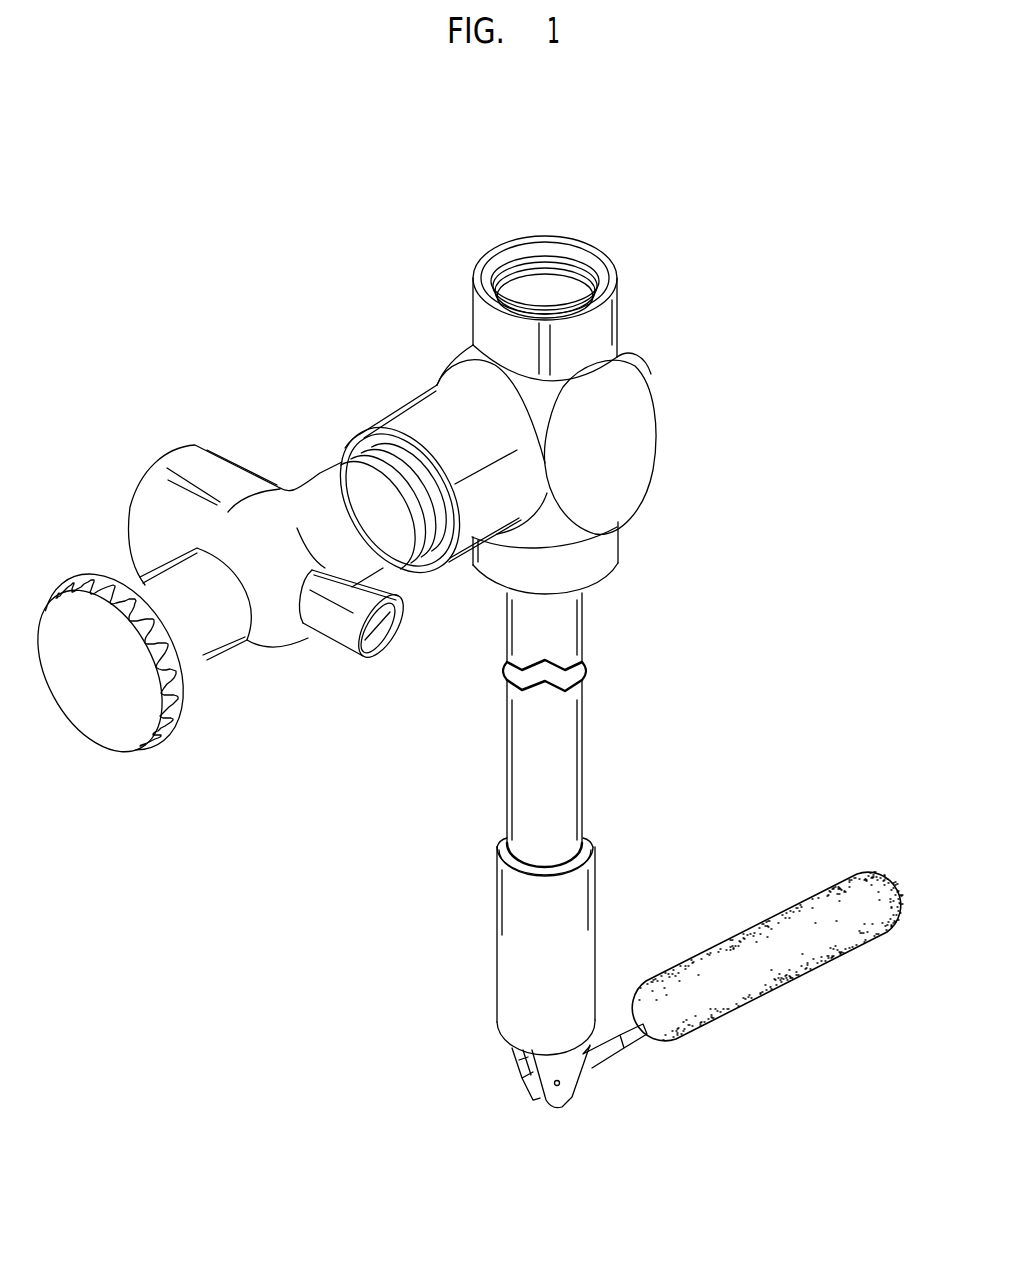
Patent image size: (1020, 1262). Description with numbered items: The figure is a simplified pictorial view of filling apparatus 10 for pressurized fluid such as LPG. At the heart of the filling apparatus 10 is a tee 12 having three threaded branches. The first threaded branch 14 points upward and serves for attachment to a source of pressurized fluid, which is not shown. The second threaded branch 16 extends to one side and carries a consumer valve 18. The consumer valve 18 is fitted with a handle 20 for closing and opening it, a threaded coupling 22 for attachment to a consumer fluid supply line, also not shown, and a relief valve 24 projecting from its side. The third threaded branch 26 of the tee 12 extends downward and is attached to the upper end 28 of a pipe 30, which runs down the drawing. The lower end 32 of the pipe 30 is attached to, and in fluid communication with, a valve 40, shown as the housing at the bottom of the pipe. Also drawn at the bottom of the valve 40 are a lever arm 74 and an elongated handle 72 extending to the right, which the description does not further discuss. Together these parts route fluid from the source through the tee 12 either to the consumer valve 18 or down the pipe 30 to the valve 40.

The filling apparatus 10 is at (668, 399).
The tee 12 is at (628, 348).
The first threaded branch 14 is at (600, 283).
The second threaded branch 16 is at (414, 408).
The consumer valve 18 is at (312, 466).
The handle 20 is at (113, 737).
The threaded coupling 22 is at (195, 450).
The relief valve 24 is at (330, 632).
The third threaded branch 26 is at (597, 562).
The upper end 28 is at (575, 597).
The pipe 30 is at (598, 708).
The lower end 32 is at (593, 846).
The valve 40 is at (600, 916).
The handle 72 is at (700, 1035).
The lever arm 74 is at (631, 1042).